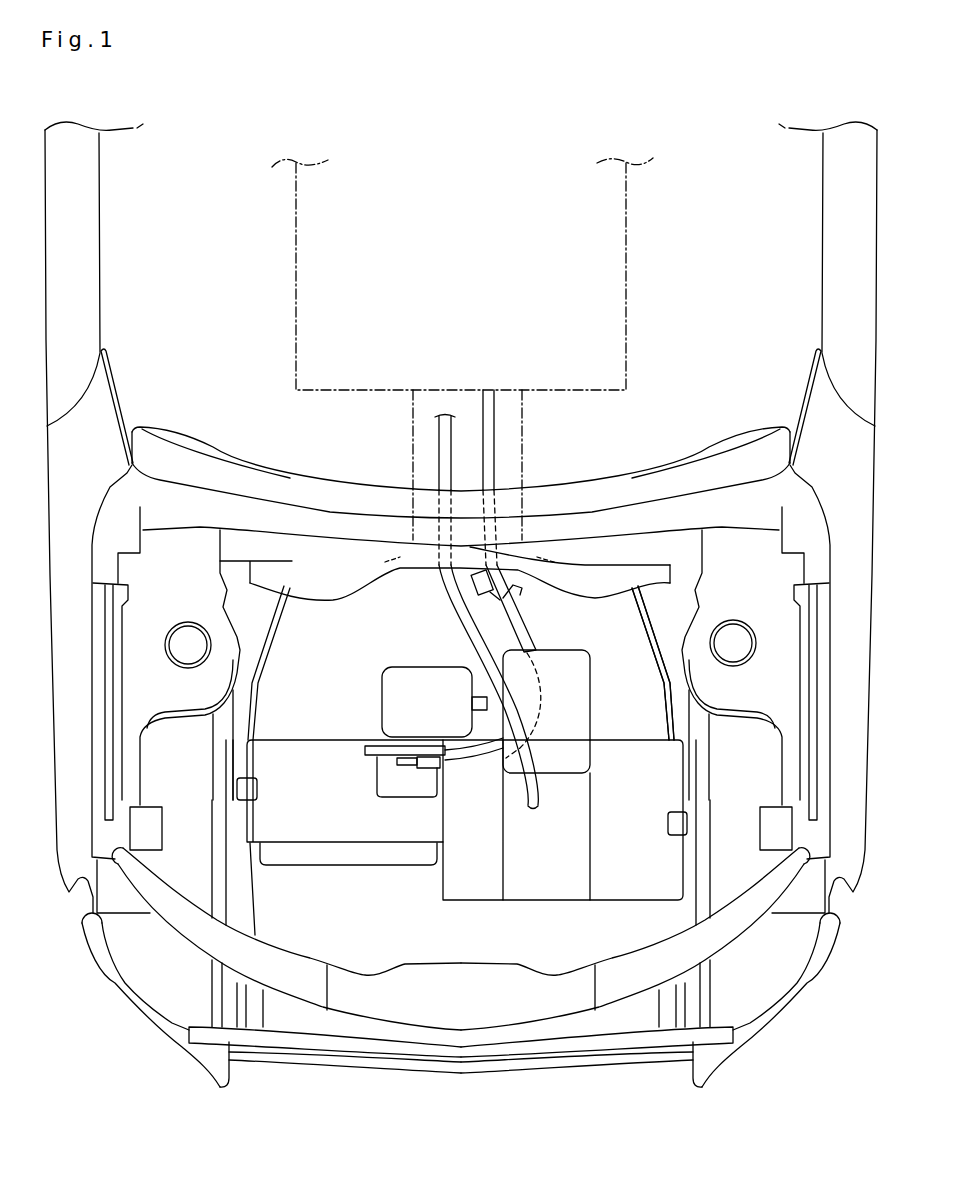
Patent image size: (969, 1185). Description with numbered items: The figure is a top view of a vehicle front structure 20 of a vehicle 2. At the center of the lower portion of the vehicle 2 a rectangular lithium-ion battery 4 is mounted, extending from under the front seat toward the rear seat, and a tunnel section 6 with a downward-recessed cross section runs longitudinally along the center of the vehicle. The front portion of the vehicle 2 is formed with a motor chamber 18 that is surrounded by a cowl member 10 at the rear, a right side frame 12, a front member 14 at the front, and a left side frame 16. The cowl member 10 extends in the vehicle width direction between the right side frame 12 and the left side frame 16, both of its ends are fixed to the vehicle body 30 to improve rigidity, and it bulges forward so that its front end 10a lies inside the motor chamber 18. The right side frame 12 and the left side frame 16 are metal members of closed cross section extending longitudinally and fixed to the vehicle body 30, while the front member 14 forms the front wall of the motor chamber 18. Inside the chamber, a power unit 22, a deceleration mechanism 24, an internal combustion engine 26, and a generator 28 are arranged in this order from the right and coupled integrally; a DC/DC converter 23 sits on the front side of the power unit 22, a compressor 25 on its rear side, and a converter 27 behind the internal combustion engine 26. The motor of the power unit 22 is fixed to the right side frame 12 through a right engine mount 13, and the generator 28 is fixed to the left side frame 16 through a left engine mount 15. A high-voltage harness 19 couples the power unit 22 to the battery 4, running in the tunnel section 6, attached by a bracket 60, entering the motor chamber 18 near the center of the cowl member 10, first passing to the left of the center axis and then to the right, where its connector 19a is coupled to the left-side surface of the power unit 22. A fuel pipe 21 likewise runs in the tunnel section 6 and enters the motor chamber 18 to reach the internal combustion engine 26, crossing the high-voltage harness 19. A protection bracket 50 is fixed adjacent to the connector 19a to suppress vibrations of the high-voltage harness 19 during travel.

The vehicle 2 is at (195, 176).
The battery 4 is at (578, 240).
The tunnel section 6 is at (523, 452).
The cowl member 10 is at (590, 578).
The front end 10a is at (600, 592).
The right side frame 12 is at (237, 877).
The right engine mount 13 is at (258, 792).
The front member 14 is at (468, 996).
The left engine mount 15 is at (667, 817).
The left side frame 16 is at (683, 913).
The motor chamber 18 is at (333, 637).
The high-voltage harness 19 is at (527, 631).
The connector 19a is at (418, 769).
The vehicle front structure 20 is at (247, 500).
The fuel pipe 21 is at (455, 613).
The power unit 22 is at (329, 802).
The DC/DC converter 23 is at (363, 873).
The deceleration mechanism 24 is at (478, 873).
The compressor 25 is at (410, 678).
The internal combustion engine 26 is at (547, 865).
The converter 27 is at (563, 670).
The generator 28 is at (625, 865).
The vehicle body 30 is at (830, 406).
The protection bracket 50 is at (367, 750).
The bracket 60 is at (502, 598).